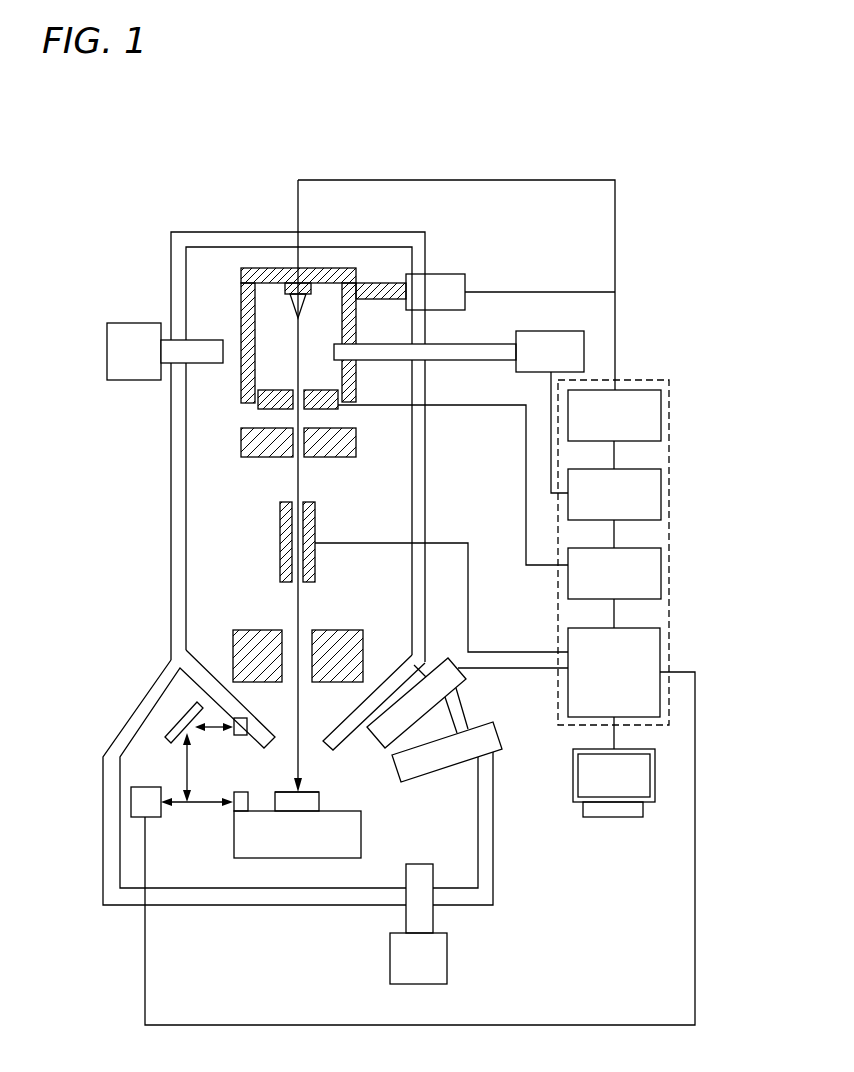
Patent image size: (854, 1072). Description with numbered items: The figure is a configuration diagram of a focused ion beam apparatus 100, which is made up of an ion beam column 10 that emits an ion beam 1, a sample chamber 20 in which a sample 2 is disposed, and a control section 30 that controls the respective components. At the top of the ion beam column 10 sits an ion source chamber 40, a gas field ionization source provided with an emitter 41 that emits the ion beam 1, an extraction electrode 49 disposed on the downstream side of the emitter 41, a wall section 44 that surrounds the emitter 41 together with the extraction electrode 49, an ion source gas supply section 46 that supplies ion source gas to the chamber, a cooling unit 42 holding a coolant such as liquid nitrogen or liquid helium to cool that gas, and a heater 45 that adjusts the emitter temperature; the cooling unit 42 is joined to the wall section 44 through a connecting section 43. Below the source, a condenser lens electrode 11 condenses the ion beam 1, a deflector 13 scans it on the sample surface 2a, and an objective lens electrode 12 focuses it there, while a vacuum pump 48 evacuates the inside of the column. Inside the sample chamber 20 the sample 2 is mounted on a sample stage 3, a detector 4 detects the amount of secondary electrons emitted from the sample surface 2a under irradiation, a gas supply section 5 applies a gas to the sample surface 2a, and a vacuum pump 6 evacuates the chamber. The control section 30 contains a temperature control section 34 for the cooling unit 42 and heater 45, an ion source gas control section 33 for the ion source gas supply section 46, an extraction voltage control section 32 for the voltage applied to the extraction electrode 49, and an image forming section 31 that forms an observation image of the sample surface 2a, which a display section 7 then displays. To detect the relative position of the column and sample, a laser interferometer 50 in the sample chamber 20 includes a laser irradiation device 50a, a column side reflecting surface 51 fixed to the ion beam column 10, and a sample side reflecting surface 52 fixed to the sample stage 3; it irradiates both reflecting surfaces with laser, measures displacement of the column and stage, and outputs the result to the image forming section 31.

The focused ion beam apparatus 100 is at (351, 165).
The ion beam column 10 is at (205, 252).
The sample chamber 20 is at (185, 675).
The vacuum pump 48 is at (135, 372).
The ion source chamber 40 is at (272, 330).
The connecting section 43 is at (380, 283).
The heater 45 is at (297, 290).
The emitter 41 is at (290, 300).
The wall section 44 is at (380, 285).
The cooling unit 42 is at (458, 280).
The ion source gas supply section 46 is at (552, 333).
The extraction electrode 49 is at (330, 410).
The condenser lens electrode 11 is at (255, 447).
The deflector 13 is at (283, 530).
The objective lens electrode 12 is at (237, 637).
The ion beam 1 is at (300, 603).
The control section 30 is at (640, 380).
The temperature control section 34 is at (580, 412).
The ion source gas control section 33 is at (573, 480).
The extraction voltage control section 32 is at (577, 580).
The image forming section 31 is at (580, 635).
The display section 7 is at (612, 785).
The detector 4 is at (445, 663).
The gas supply section 5 is at (498, 735).
The sample stage 3 is at (348, 832).
The sample 2 is at (323, 800).
The sample surface 2a is at (312, 788).
The sample side reflecting surface 52 is at (243, 800).
The column side reflecting surface 51 is at (200, 707).
The laser interferometer 50 is at (145, 767).
The laser irradiation device 50a is at (131, 793).
The vacuum pump 6 is at (432, 950).